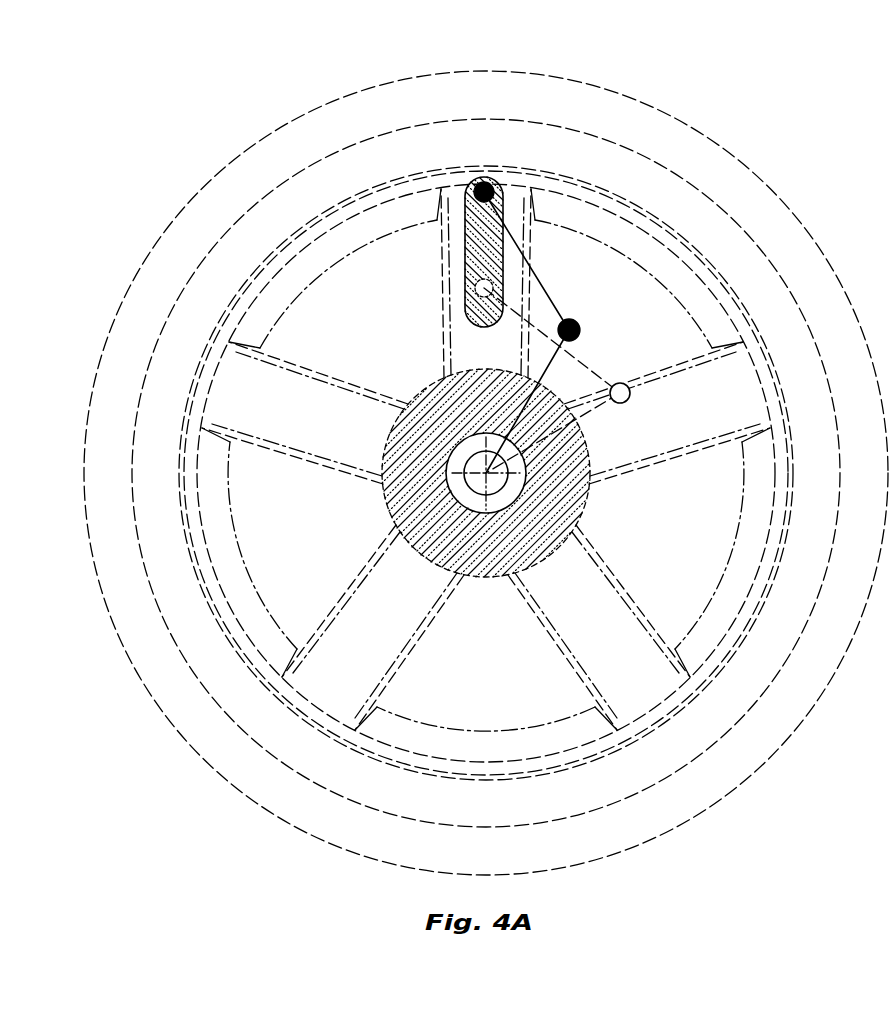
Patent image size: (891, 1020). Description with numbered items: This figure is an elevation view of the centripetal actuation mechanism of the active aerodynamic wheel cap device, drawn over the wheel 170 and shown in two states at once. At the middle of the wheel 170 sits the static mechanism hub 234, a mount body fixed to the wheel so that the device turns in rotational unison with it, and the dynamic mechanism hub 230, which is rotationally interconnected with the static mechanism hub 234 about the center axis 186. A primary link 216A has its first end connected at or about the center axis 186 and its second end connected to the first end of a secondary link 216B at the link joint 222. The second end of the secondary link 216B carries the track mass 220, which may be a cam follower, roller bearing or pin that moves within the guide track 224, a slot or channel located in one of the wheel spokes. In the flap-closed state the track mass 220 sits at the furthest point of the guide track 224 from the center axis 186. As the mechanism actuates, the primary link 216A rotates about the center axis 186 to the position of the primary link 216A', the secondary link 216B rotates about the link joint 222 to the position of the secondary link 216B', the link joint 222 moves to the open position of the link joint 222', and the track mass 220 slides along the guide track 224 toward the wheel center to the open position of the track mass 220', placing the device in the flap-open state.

The wheel 170 is at (772, 760).
The center axis 186 is at (477, 461).
The primary link 216A is at (464, 401).
The primary link (flap-open position) 216A' is at (591, 461).
The secondary link 216B is at (566, 247).
The secondary link (flap-open position) 216B' is at (622, 340).
The track mass 220 is at (505, 143).
The track mass (open position) 220' is at (419, 293).
The link joint 222 is at (614, 322).
The link joint (open position) 222' is at (678, 399).
The guide track 224 is at (462, 196).
The dynamic mechanism hub 230 is at (518, 510).
The static mechanism hub 234 is at (384, 508).